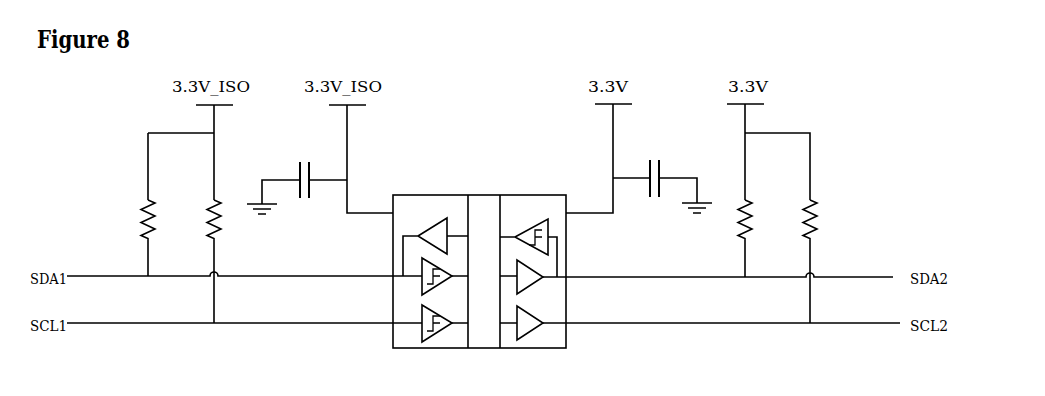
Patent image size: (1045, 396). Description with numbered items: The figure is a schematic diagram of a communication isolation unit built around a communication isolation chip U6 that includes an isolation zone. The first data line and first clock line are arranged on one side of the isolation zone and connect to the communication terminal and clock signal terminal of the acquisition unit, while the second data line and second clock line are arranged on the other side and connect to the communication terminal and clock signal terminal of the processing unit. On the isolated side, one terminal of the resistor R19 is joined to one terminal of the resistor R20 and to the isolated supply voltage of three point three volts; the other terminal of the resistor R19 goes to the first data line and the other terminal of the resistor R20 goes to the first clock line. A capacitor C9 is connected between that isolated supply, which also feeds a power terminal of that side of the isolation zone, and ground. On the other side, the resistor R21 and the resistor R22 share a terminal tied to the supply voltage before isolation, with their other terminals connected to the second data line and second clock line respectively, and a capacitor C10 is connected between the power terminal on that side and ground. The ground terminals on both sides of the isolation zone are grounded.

The resistor R19 is at (130, 238).
The resistor R20 is at (195, 261).
The resistor R21 is at (763, 238).
The resistor R22 is at (829, 261).
The capacitor C9 is at (297, 178).
The capacitor C10 is at (662, 178).
The communication isolation chip U6 is at (479, 256).